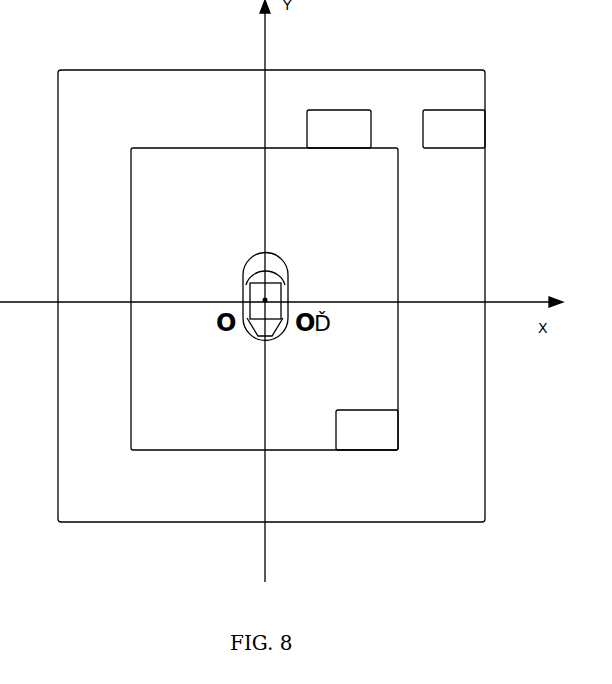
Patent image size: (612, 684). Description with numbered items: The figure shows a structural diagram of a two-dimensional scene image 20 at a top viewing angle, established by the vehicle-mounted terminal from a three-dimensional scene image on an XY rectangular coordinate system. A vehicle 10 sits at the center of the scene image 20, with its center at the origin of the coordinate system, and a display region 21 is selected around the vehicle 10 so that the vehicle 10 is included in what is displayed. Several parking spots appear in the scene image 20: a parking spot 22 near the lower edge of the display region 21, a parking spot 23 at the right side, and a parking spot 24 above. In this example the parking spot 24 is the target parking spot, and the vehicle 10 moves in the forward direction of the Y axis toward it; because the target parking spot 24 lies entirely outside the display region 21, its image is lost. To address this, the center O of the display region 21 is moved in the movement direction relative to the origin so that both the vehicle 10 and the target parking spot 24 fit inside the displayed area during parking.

The vehicle 10 is at (292, 252).
The two-dimensional scene image 20 is at (107, 97).
The display region 21 is at (396, 150).
The parking spot 22 is at (356, 450).
The parking spot 23 is at (466, 148).
The parking spot 24 is at (327, 110).